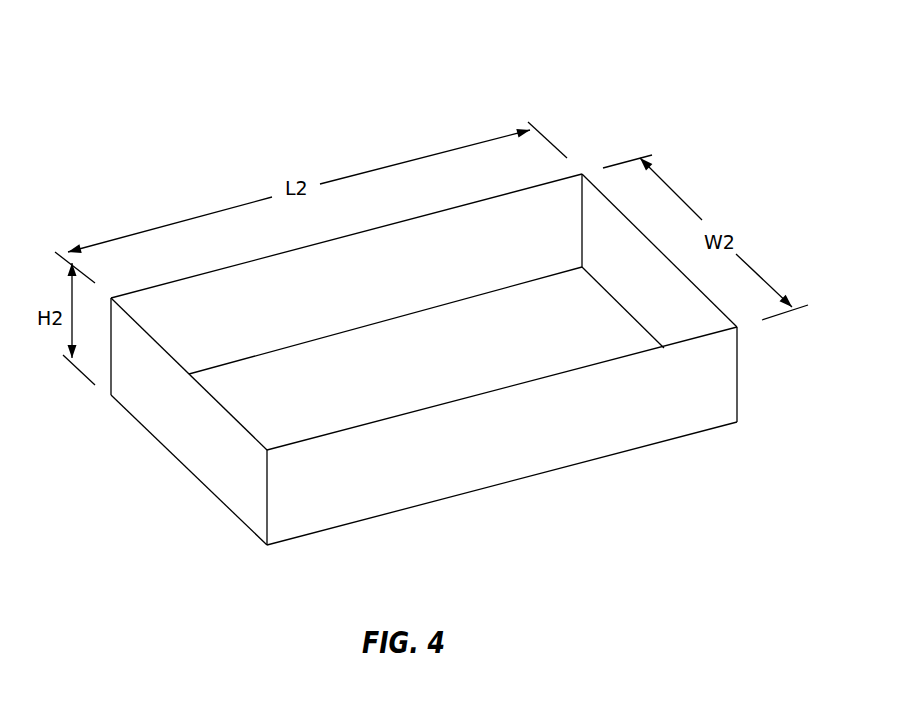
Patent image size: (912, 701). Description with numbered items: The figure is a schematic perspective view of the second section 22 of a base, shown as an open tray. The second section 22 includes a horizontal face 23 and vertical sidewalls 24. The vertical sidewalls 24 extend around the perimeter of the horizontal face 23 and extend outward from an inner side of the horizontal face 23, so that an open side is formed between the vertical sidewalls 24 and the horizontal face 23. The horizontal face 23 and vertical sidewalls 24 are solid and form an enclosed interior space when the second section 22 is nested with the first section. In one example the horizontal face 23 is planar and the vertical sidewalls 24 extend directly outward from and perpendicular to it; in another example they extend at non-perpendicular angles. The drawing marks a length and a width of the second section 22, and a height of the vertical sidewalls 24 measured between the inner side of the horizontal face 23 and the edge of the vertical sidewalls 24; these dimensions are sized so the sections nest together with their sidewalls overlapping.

The second section 22 is at (443, 316).
The horizontal face 23 is at (392, 382).
The vertical sidewalls 24 is at (298, 522).